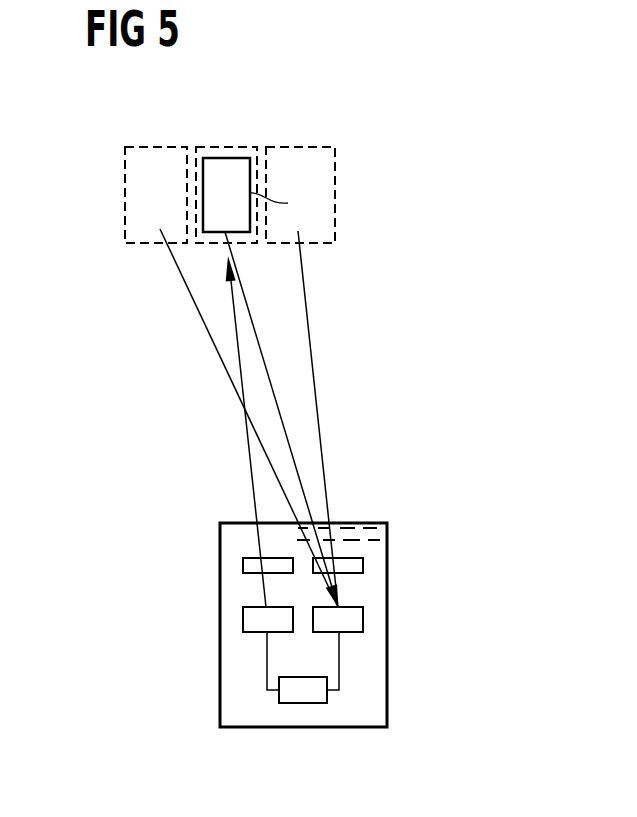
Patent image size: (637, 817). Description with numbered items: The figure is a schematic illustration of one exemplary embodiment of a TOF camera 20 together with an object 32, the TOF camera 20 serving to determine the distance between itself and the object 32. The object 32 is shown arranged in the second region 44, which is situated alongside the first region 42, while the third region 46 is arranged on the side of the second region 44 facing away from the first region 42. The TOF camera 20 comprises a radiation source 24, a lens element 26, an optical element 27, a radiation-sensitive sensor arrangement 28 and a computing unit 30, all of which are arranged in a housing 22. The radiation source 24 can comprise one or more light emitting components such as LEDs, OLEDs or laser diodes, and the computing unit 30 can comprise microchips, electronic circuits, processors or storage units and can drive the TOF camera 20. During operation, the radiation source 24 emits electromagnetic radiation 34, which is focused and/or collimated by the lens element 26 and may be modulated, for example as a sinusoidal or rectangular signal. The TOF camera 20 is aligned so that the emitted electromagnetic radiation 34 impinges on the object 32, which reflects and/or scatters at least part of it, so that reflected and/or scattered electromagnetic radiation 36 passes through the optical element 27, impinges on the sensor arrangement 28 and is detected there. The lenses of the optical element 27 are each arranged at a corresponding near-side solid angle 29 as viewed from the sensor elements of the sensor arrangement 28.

The TOF camera 20 is at (184, 679).
The housing 22 is at (388, 670).
The radiation source 24 is at (243, 620).
The lens element 26 is at (243, 565).
The optical element 27 is at (363, 565).
The radiation-sensitive sensor arrangement 28 is at (363, 620).
The near-side solid angle 29 is at (379, 538).
The computing unit 30 is at (303, 703).
The object 32 is at (286, 206).
The emitted electromagnetic radiation 34 is at (156, 422).
The reflected and/or scattered electromagnetic radiation 36 is at (347, 422).
The first region 42 is at (283, 147).
The second region 44 is at (218, 147).
The third region 46 is at (152, 147).